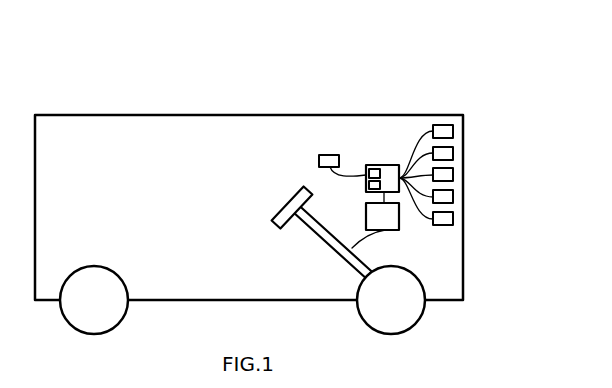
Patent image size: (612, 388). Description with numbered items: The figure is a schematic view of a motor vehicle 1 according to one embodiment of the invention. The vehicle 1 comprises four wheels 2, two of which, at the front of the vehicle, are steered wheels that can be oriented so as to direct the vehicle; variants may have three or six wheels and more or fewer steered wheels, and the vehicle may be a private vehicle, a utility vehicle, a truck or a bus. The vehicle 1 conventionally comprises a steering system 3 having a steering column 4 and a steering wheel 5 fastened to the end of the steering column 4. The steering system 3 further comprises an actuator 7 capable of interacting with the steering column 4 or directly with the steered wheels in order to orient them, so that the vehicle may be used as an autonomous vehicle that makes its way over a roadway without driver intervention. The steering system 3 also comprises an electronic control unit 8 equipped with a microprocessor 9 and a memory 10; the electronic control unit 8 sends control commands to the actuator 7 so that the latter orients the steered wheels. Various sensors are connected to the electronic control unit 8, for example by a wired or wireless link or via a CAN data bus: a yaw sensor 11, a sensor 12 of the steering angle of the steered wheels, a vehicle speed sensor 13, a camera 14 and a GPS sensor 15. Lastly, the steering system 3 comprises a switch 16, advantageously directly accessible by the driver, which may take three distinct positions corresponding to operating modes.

The motor vehicle 1 is at (327, 88).
The wheels 2 is at (115, 325).
The steering system 3 is at (292, 214).
The steering column 4 is at (338, 248).
The steering wheel 5 is at (288, 203).
The actuator 7 is at (393, 230).
The electronic control unit 8 is at (384, 152).
The microprocessor 9 is at (372, 168).
The memory 10 is at (366, 185).
The yaw sensor 11 is at (453, 131).
The steering angle sensor 12 is at (453, 153).
The vehicle speed sensor 13 is at (453, 175).
The camera 14 is at (453, 197).
The GPS sensor 15 is at (453, 219).
The switch 16 is at (324, 155).